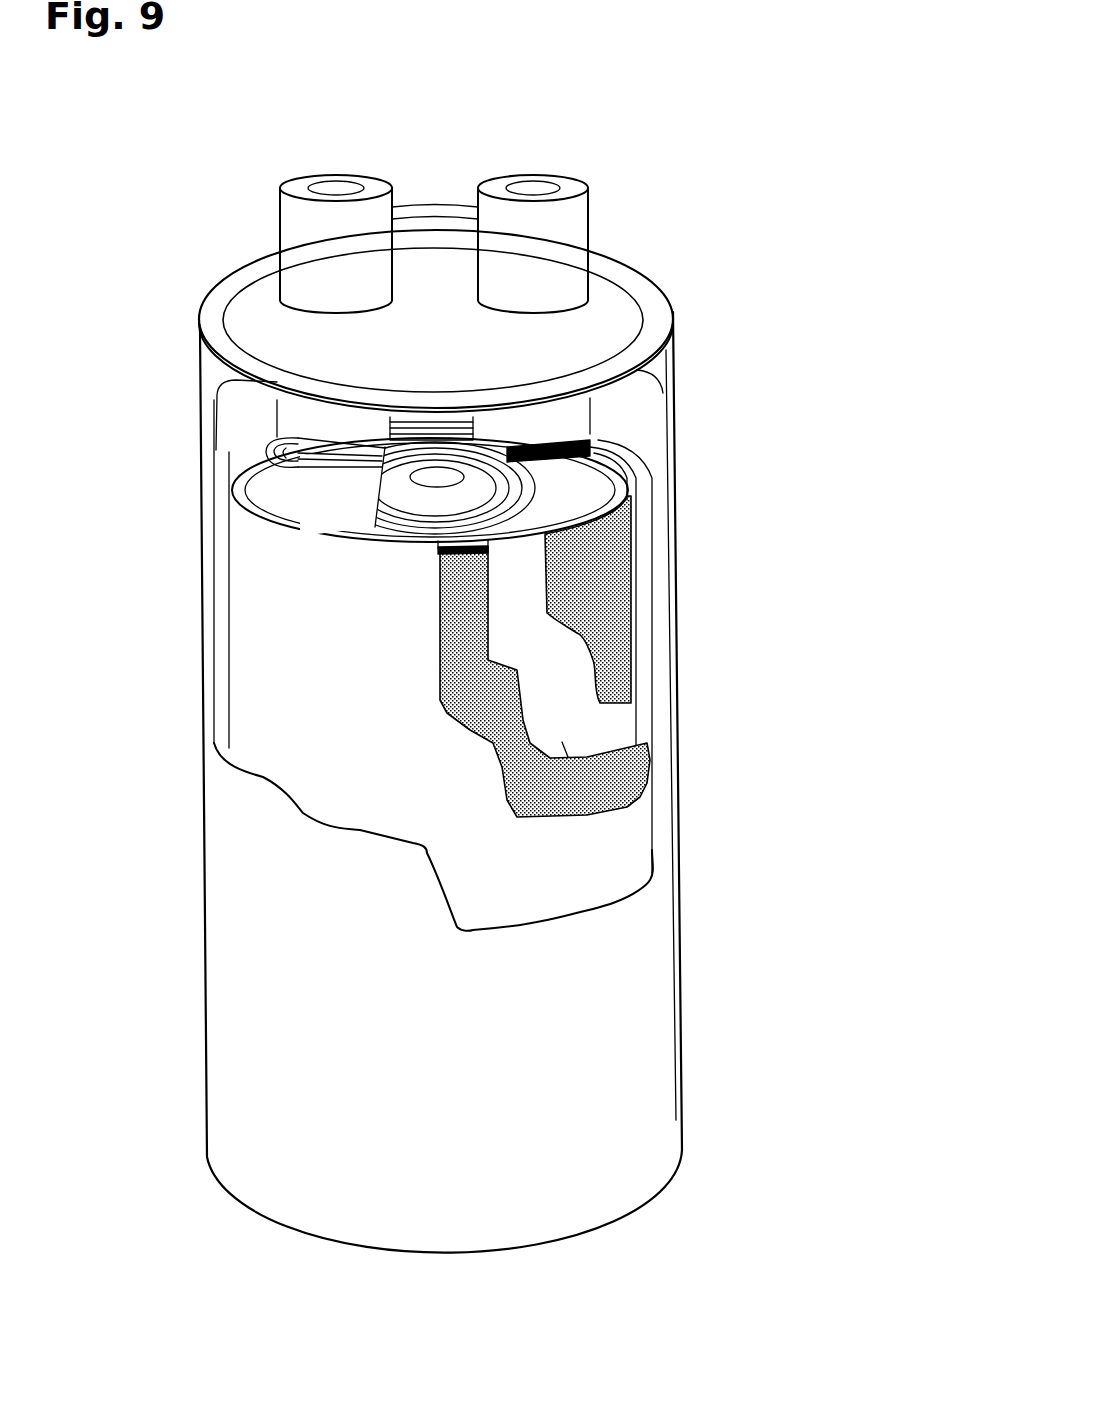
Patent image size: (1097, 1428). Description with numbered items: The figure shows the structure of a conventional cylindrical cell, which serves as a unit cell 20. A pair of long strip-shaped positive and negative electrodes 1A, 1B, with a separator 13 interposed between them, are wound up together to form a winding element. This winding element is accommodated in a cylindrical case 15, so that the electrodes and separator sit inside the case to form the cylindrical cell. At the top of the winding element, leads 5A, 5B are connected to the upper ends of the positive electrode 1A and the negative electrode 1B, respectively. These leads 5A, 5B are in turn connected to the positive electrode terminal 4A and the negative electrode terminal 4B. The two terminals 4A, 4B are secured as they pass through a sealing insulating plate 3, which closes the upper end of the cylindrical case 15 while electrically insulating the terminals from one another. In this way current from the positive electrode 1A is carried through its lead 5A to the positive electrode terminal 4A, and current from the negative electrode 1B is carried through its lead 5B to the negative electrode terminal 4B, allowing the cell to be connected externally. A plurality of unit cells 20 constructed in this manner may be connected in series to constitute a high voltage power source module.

The positive electrode 1A is at (610, 575).
The negative electrode 1B is at (650, 757).
The sealing insulating plate 3 is at (430, 238).
The positive electrode terminal 4A is at (530, 178).
The negative electrode terminal 4B is at (336, 178).
The lead 5A is at (610, 472).
The lead 5B is at (310, 480).
The separator 13 is at (603, 807).
The cylindrical case 15 is at (660, 988).
The unit cell 20 is at (472, 1349).